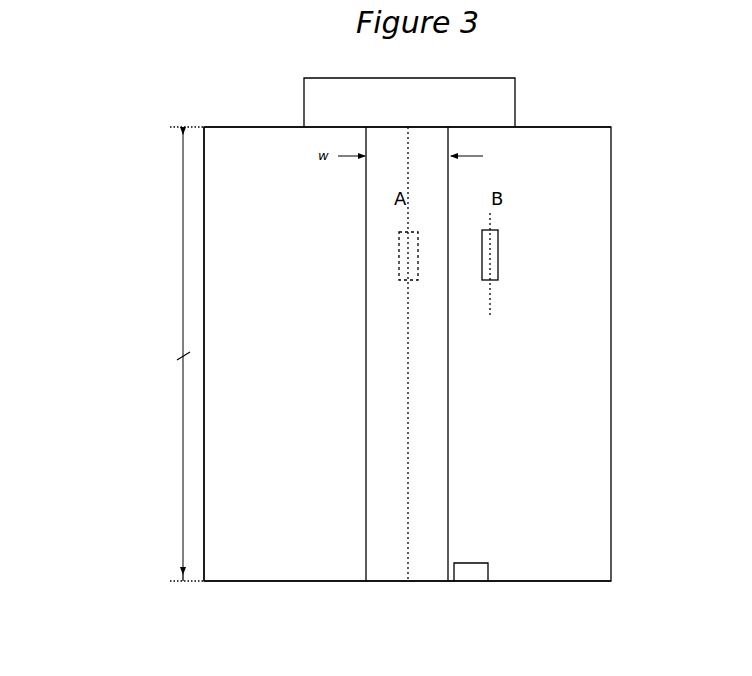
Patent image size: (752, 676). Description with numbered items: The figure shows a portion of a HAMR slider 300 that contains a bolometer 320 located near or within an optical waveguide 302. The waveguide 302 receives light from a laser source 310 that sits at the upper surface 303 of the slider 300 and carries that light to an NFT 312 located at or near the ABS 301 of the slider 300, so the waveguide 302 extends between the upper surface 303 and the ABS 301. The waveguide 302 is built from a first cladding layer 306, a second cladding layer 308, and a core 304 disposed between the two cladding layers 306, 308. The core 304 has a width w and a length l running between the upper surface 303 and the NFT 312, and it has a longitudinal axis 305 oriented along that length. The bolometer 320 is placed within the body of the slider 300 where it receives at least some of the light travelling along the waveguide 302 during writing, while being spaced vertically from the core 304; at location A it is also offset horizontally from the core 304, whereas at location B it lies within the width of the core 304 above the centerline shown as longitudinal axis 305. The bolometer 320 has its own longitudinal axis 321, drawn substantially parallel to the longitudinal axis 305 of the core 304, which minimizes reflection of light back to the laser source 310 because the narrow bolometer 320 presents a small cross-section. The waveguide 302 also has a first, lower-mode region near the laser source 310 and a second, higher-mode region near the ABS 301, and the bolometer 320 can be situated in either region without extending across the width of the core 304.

The HAMR slider 300 is at (624, 91).
The ABS 301 is at (283, 583).
The optical waveguide 302 is at (163, 228).
The upper surface 303 is at (260, 127).
The core 304 is at (430, 445).
The longitudinal axis 305 is at (408, 350).
The first cladding layer 306 is at (310, 418).
The second cladding layer 308 is at (545, 490).
The laser source 310 is at (467, 78).
The NFT 312 is at (470, 582).
The bolometer 320 is at (498, 242).
The longitudinal axis 321 is at (490, 300).